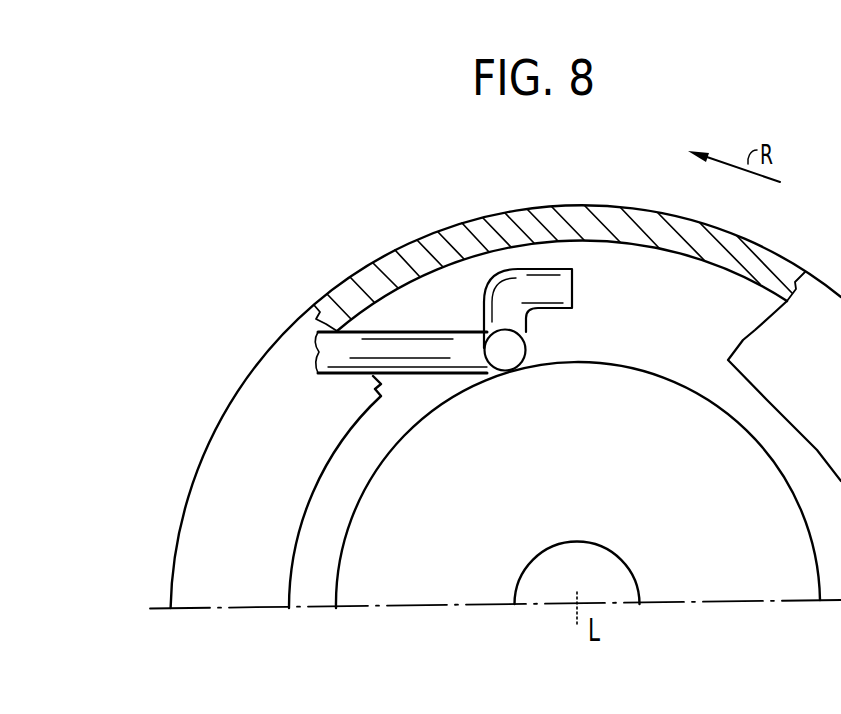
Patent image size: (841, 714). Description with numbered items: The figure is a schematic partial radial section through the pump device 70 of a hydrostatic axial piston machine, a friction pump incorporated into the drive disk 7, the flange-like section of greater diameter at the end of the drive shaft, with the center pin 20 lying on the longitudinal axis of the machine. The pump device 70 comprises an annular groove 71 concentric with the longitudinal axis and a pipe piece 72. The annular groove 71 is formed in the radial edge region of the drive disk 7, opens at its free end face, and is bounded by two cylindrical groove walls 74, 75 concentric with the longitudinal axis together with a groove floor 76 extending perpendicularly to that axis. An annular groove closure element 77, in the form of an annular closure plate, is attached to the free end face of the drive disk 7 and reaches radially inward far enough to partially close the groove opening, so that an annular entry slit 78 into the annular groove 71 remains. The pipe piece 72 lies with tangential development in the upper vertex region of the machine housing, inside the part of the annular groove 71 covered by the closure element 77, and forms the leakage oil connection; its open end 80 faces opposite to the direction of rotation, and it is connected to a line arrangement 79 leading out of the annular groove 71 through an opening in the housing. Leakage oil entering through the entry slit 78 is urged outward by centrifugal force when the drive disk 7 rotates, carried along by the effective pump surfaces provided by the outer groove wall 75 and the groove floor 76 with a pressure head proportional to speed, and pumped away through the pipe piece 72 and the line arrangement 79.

The drive disk 7 is at (727, 580).
The center pin 20 is at (603, 590).
The pump device 70 is at (445, 282).
The annular groove 71 is at (740, 288).
The pipe piece 72 is at (544, 290).
The cylindrical groove wall 74 is at (683, 380).
The cylindrical groove wall 75 is at (695, 262).
The groove floor 76 is at (658, 356).
The annular groove closure element 77 is at (204, 460).
The annular entry slit 78 is at (368, 457).
The line arrangement 79 is at (388, 357).
The open end 80 is at (574, 275).